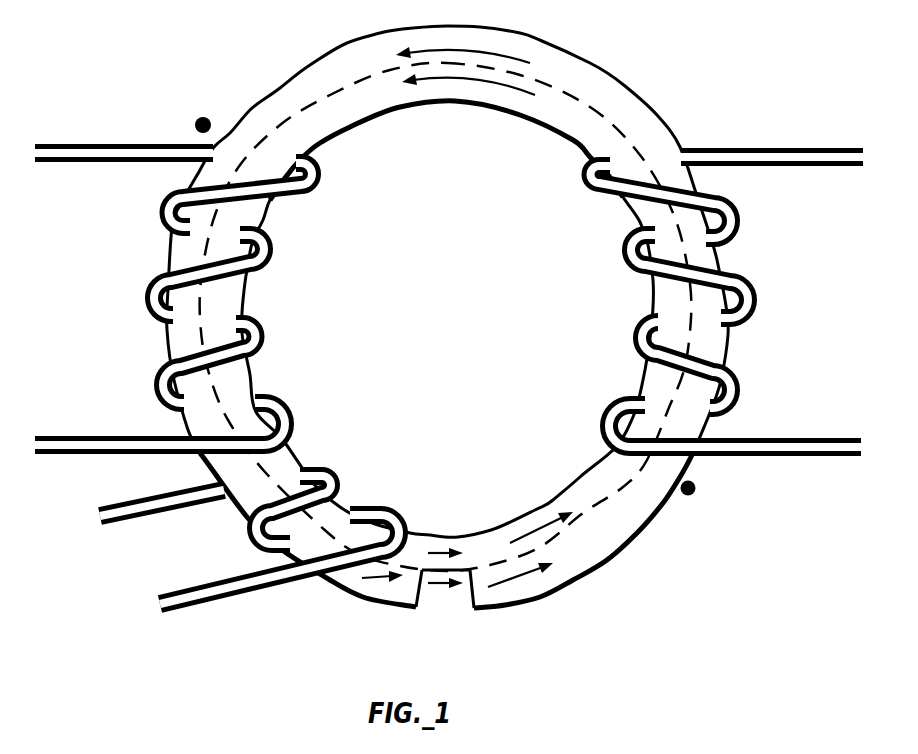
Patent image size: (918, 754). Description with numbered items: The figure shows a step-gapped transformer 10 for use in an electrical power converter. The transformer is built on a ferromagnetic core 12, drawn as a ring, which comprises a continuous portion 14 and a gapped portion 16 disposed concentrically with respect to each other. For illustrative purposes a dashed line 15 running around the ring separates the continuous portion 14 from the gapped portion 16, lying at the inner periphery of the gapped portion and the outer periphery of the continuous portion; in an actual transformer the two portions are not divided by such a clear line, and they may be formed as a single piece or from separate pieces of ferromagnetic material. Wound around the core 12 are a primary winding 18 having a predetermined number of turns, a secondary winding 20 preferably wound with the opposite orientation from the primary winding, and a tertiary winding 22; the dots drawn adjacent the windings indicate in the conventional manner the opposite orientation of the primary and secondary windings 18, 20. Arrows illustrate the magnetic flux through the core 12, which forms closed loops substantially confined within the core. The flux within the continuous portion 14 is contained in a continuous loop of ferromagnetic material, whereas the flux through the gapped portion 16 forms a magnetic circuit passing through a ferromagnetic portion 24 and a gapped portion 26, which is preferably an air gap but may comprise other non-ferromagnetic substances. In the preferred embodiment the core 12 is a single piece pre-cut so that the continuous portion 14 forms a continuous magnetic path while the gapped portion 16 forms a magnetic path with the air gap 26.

The step-gapped transformer 10 is at (449, 337).
The ferromagnetic core 12 is at (576, 53).
The continuous portion 14 is at (536, 517).
The dashed line 15 is at (603, 507).
The gapped portion 16 is at (588, 557).
The primary winding 18 is at (107, 143).
The secondary winding 20 is at (755, 147).
The tertiary winding 22 is at (217, 583).
The ferromagnetic portion 24 is at (521, 604).
The gapped portion (air gap) 26 is at (433, 605).